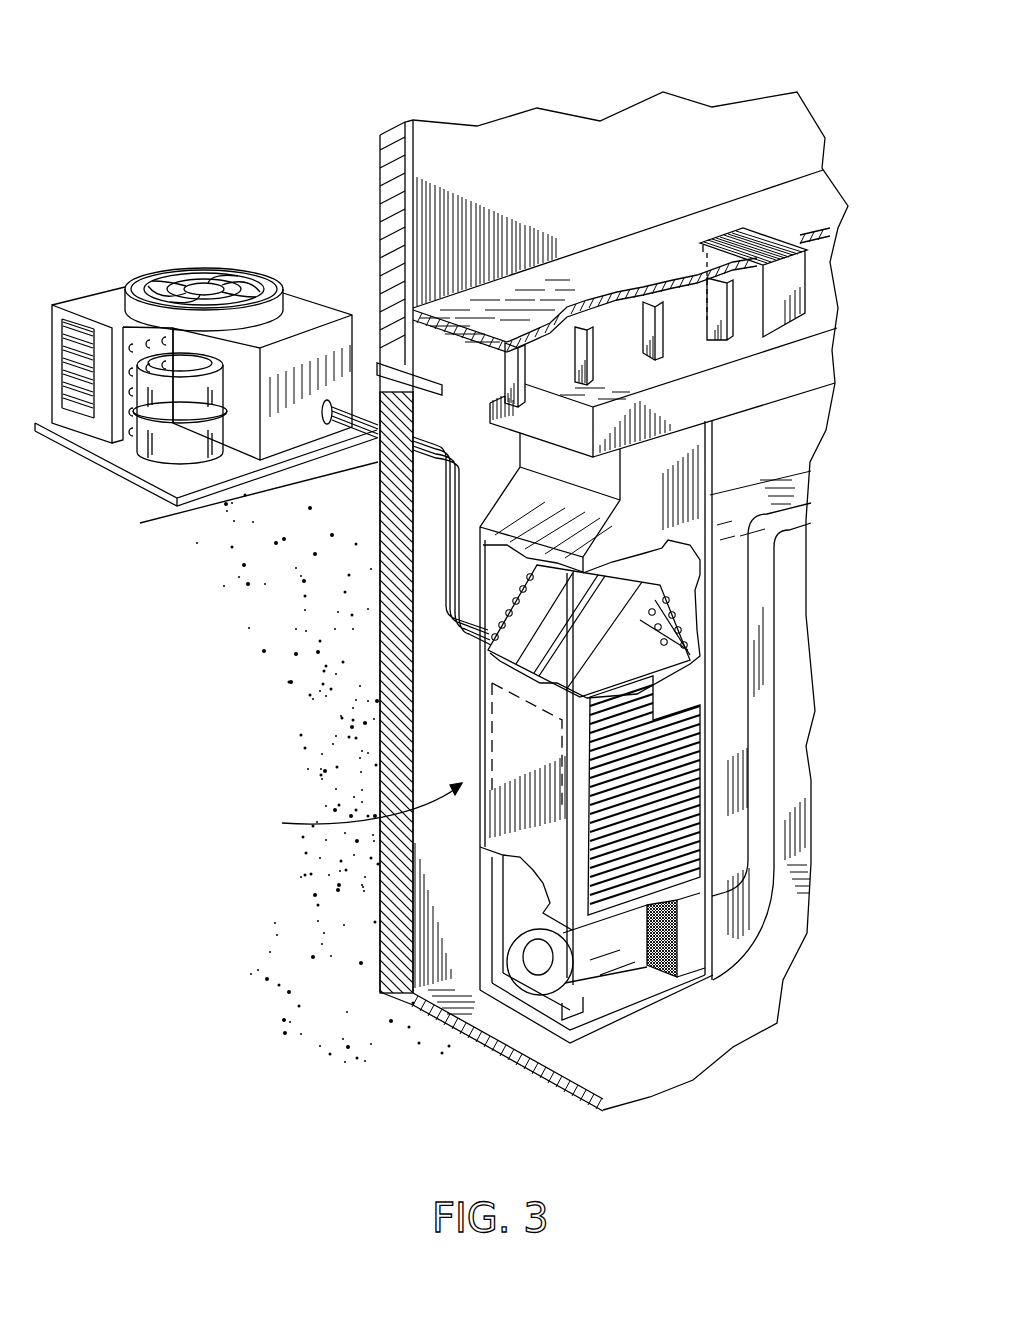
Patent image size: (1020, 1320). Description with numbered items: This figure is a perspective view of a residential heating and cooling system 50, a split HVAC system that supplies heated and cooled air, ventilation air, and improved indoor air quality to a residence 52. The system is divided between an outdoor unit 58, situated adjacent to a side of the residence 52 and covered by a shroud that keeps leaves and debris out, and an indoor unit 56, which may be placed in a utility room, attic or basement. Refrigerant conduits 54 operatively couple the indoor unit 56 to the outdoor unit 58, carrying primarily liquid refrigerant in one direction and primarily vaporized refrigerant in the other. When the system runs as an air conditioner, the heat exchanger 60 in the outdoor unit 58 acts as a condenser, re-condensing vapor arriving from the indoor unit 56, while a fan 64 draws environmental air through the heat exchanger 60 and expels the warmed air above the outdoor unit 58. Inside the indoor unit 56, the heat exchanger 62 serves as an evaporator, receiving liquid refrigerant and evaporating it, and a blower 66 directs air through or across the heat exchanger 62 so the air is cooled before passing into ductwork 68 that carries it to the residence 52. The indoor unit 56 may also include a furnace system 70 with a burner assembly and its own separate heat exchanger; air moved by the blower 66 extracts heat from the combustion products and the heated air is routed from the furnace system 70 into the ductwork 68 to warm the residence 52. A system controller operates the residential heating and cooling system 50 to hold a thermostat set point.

The residential heating and cooling system 50 is at (200, 88).
The residence 52 is at (522, 142).
The refrigerant conduits 54 is at (450, 535).
The indoor unit 56 is at (357, 811).
The outdoor unit 58 is at (160, 258).
The heat exchanger 60 is at (137, 342).
The heat exchanger 62 is at (543, 653).
The fan 64 is at (222, 270).
The blower 66 is at (533, 980).
The ductwork 68 is at (757, 377).
The furnace system 70 is at (492, 742).